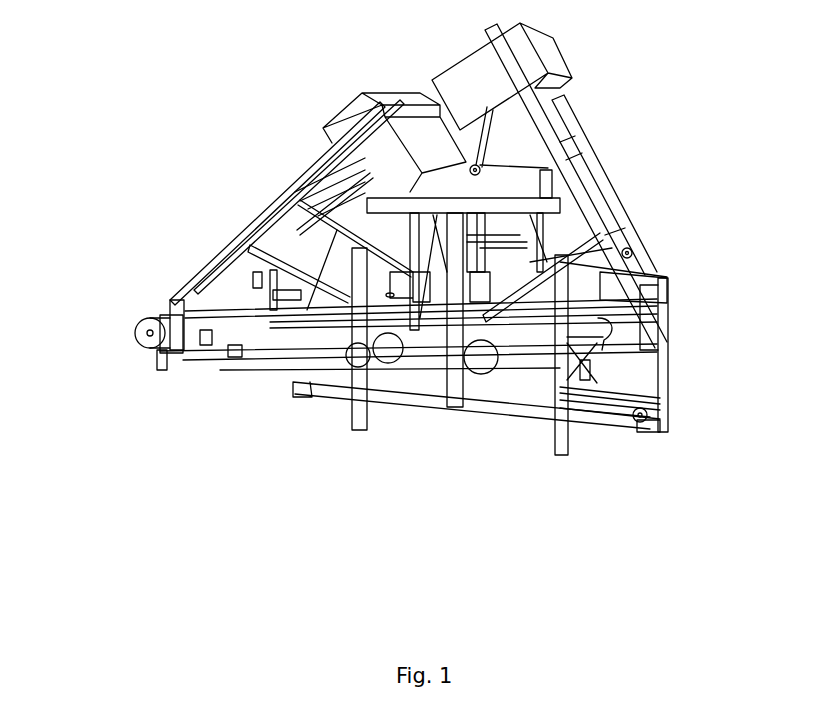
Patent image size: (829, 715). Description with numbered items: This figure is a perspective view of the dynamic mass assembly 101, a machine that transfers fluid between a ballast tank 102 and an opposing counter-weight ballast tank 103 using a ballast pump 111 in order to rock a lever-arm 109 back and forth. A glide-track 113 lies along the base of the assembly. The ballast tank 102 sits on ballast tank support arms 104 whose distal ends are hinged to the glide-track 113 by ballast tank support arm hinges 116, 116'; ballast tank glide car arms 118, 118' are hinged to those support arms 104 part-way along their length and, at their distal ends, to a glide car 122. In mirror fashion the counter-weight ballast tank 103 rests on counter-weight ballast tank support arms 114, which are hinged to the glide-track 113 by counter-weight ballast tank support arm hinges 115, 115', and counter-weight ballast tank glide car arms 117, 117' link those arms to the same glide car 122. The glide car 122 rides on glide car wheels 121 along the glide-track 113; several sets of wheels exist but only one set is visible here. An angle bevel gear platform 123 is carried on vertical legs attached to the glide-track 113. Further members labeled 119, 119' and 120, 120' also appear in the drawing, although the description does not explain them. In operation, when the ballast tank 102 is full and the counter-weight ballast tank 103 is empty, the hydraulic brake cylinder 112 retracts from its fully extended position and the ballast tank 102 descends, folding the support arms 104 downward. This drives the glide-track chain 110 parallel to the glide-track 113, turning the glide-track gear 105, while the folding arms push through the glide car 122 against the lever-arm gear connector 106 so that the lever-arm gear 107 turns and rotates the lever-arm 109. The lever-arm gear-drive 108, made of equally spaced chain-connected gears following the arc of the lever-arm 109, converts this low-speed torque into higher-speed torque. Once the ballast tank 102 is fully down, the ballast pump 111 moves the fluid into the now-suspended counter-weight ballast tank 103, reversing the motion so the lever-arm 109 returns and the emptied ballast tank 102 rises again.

The dynamic mass assembly 101 is at (684, 375).
The ballast tank 102 is at (565, 72).
The counter-weight ballast tank 103 is at (355, 100).
The ballast tank support arms 104 is at (575, 133).
The glide-track gear 105 is at (143, 350).
The lever-arm gear connector 106 is at (388, 372).
The lever-arm gear 107 is at (472, 372).
The lever-arm gear-drive 108 is at (312, 395).
The lever-arm 109 is at (392, 400).
The glide-track chain 110 is at (207, 368).
The ballast pump 111 is at (352, 222).
The hydraulic brake cylinder 112 is at (190, 293).
The glide-track 113 is at (190, 368).
The counter-weight ballast tank support arms 114 is at (330, 158).
The counter-weight ballast tank support arm hinge 115 is at (204, 204).
The counter-weight ballast tank support arm hinge 115' is at (269, 197).
The ballast tank support arm hinge 116 is at (720, 355).
The ballast tank support arm hinge 116' is at (711, 307).
The counter-weight ballast tank glide car arm 117 is at (224, 371).
The counter-weight ballast tank glide car arm 117' is at (255, 390).
The ballast tank glide car arm 118 is at (600, 419).
The ballast tank glide car arm 118' is at (637, 410).
The brace 119 is at (225, 225).
The brace 119' is at (295, 213).
The brace 120 is at (610, 240).
The brace 120' is at (629, 225).
The glide car wheels 121 is at (310, 392).
The glide car 122 is at (512, 328).
The angle bevel gear platform 123 is at (653, 293).